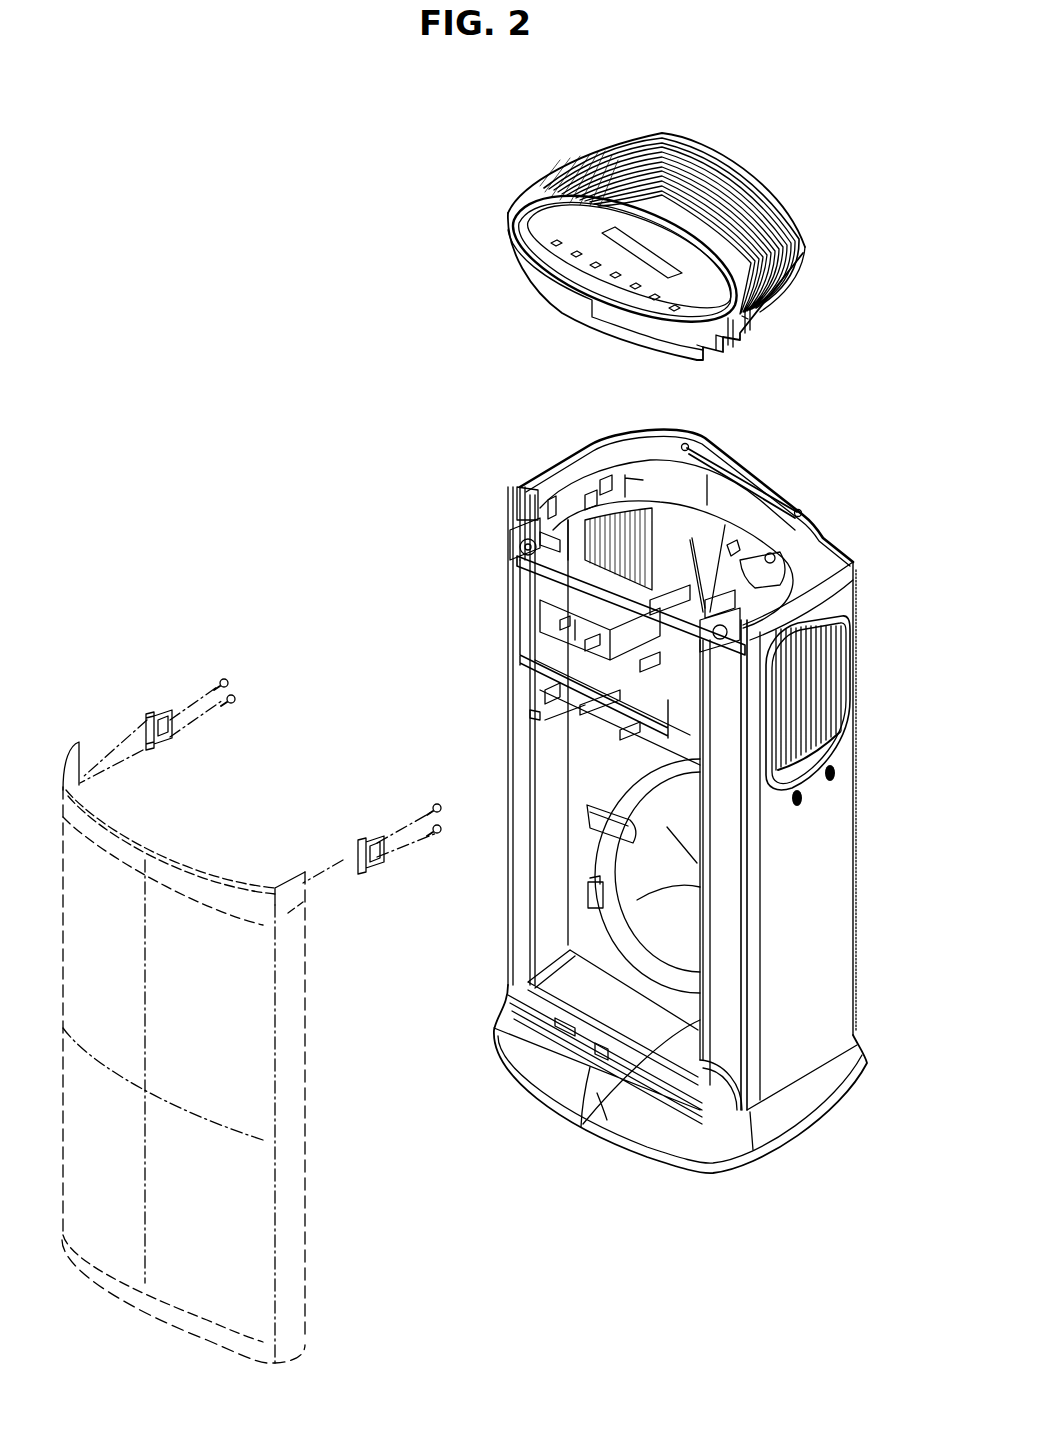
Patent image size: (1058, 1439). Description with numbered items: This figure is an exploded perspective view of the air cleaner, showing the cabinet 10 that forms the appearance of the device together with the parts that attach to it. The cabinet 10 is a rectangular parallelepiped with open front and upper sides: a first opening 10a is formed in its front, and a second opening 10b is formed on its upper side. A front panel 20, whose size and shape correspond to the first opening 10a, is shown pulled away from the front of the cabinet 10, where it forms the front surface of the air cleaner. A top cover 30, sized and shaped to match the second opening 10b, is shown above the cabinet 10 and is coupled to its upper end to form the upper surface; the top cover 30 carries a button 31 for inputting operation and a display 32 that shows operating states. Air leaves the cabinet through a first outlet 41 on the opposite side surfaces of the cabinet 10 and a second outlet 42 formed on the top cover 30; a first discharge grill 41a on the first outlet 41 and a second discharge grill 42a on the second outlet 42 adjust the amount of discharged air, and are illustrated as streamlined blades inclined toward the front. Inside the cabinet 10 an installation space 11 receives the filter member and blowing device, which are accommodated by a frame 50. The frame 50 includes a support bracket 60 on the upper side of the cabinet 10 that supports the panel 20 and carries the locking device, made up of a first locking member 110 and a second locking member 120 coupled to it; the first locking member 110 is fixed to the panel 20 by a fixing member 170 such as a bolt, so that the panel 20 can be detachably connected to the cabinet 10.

The cabinet 10 is at (825, 496).
The first opening 10a is at (583, 1124).
The second opening 10b is at (763, 491).
The installation space 11 is at (555, 931).
The front panel 20 is at (67, 738).
The top cover 30 is at (806, 211).
The button 31 is at (530, 241).
The display 32 is at (520, 218).
The first outlet 41 is at (822, 708).
The first discharge grill 41a is at (812, 679).
The second outlet 42 is at (738, 193).
The second discharge grill 42a is at (702, 186).
The frame 50 is at (522, 664).
The support bracket 60 is at (545, 582).
The first locking member 110 is at (157, 718).
The second locking member 120 is at (517, 523).
The fixing member 170 is at (222, 680).